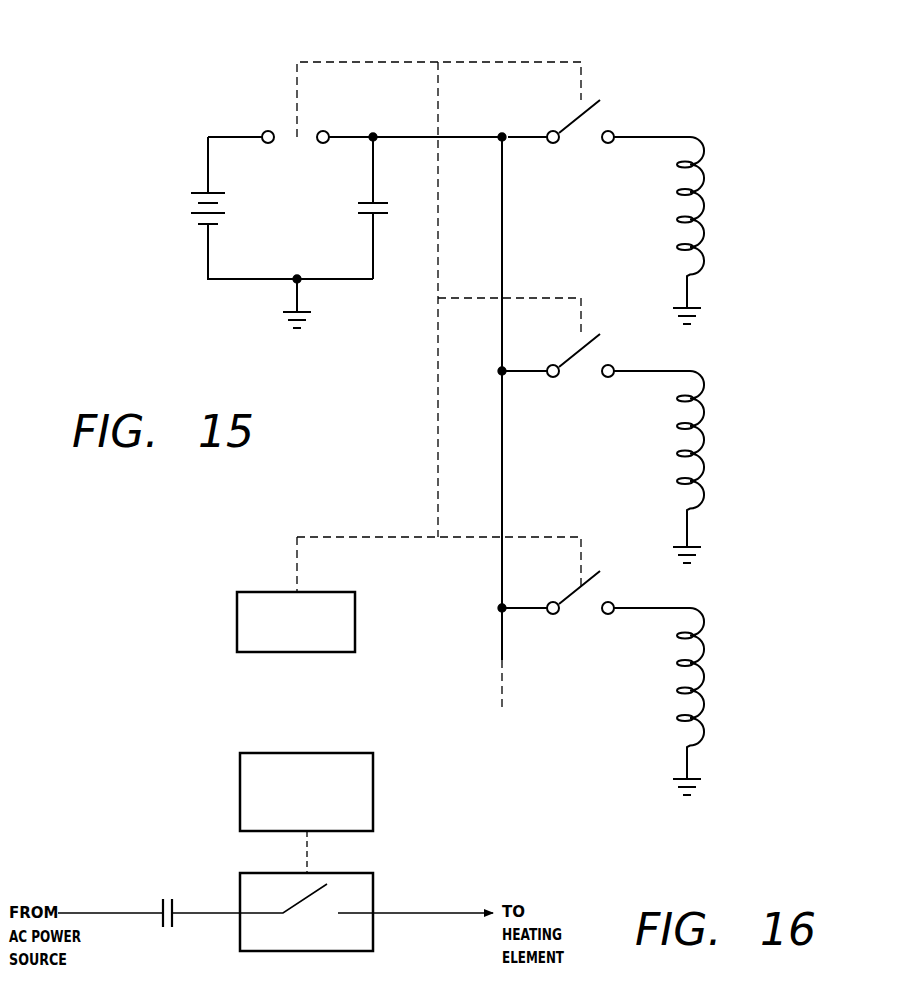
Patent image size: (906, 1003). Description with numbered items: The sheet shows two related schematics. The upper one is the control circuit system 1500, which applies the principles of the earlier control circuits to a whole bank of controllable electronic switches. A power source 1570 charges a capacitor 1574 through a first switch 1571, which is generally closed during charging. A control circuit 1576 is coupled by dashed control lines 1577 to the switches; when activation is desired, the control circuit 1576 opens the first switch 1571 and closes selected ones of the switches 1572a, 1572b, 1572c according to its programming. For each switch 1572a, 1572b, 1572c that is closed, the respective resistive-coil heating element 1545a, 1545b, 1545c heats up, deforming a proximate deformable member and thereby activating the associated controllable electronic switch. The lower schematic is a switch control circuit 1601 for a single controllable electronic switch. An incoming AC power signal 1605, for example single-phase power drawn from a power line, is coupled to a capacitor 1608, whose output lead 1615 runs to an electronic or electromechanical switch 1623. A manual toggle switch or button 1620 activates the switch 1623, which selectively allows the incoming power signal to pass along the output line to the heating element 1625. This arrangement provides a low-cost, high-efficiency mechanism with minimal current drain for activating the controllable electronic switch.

In FIG. 15, the control circuit system 1500 is at (216, 46).
In FIG. 15, the power source 1570 is at (197, 190).
In FIG. 15, the first switch 1571 is at (284, 132).
In FIG. 15, the capacitor 1574 is at (366, 215).
In FIG. 15, the switch 1572a is at (600, 100).
In FIG. 15, the switch 1572b is at (590, 340).
In FIG. 15, the switch 1572c is at (590, 572).
In FIG. 15, the heating element 1545a is at (705, 207).
In FIG. 15, the heating element 1545b is at (705, 443).
In FIG. 15, the heating element 1545c is at (705, 680).
In FIG. 15, the control circuit 1576 is at (237, 622).
In FIG. 15, the control lines 1577 is at (357, 537).
In FIG. 16, the switch control circuit 1601 is at (128, 815).
In FIG. 16, the incoming AC power signal 1605 is at (125, 912).
In FIG. 16, the capacitor 1608 is at (176, 903).
In FIG. 16, the connecting line 1615 is at (206, 915).
In FIG. 16, the manual toggle switch or button 1620 is at (373, 793).
In FIG. 16, the electronic or electromechanical switch 1623 is at (310, 935).
In FIG. 16, the heating element 1625 is at (415, 912).